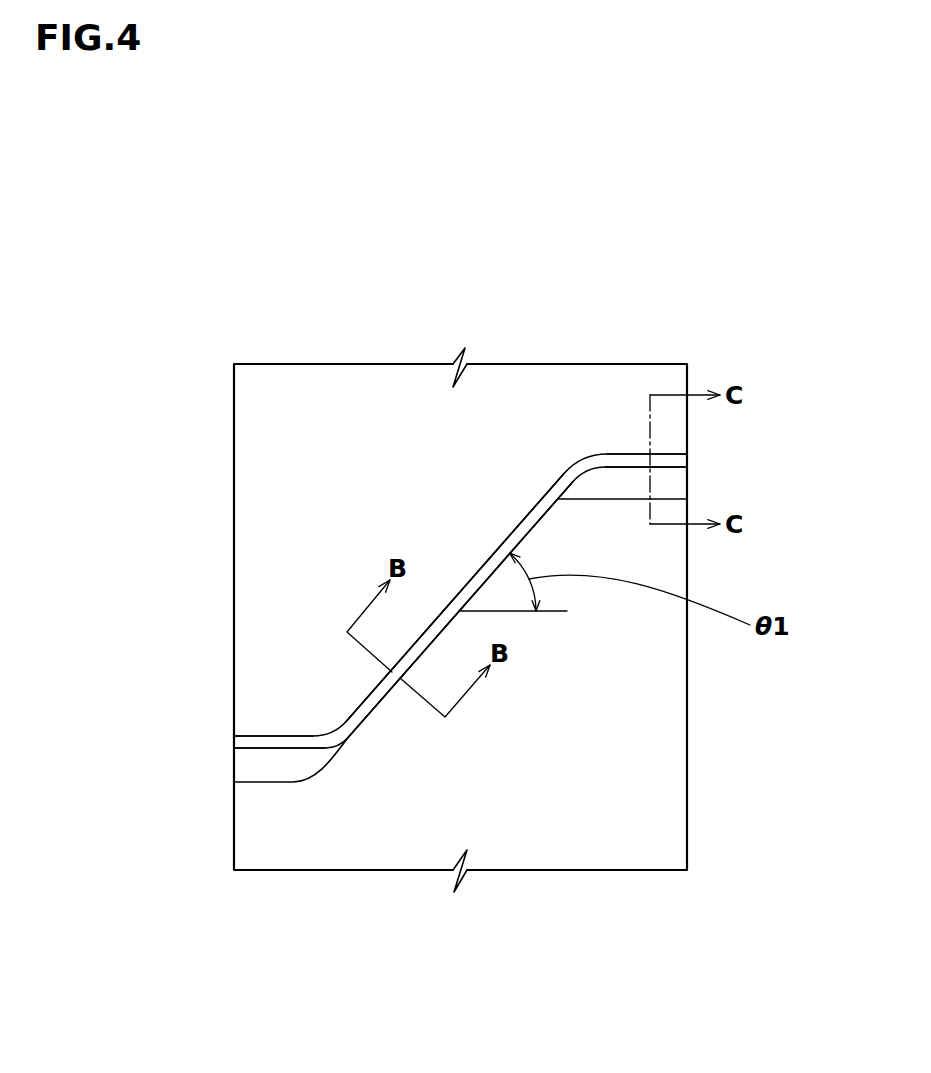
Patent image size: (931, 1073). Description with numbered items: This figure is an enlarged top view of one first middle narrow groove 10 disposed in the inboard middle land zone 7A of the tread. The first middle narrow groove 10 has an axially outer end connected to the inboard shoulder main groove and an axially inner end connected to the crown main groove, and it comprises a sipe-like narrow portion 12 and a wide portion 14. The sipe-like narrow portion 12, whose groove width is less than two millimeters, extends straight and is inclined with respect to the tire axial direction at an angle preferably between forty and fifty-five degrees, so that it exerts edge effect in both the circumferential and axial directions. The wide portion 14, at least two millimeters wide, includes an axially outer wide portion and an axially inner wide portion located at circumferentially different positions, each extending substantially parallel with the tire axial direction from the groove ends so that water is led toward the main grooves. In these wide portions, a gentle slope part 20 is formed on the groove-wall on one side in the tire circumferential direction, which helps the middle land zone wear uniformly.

The inboard middle land zone 7A is at (283, 430).
The first middle narrow groove 10 is at (463, 595).
The sipe-like narrow portion 12 is at (487, 567).
The wide portion 14 is at (618, 487).
The gentle slope part 20 is at (670, 485).